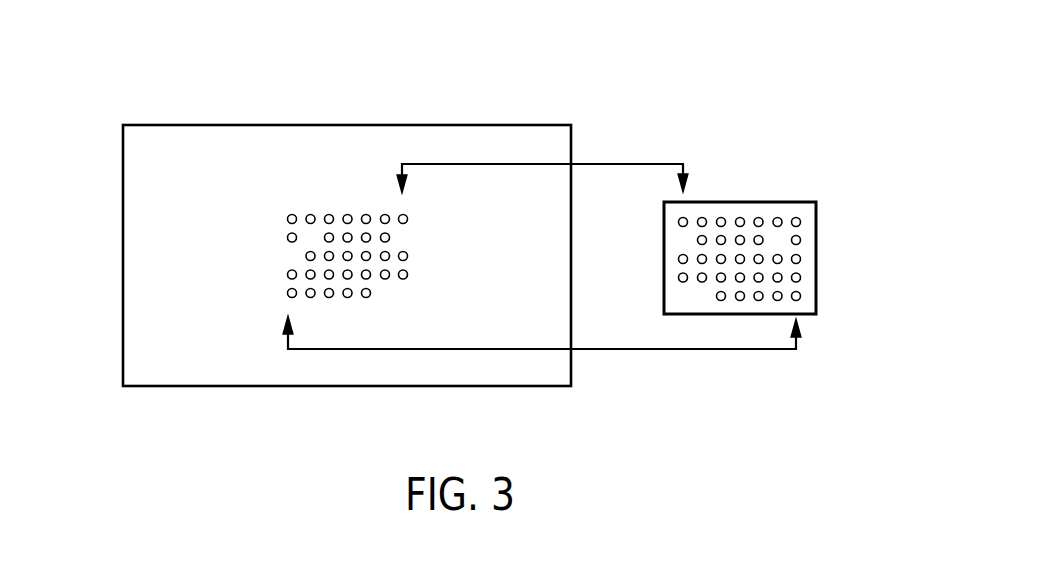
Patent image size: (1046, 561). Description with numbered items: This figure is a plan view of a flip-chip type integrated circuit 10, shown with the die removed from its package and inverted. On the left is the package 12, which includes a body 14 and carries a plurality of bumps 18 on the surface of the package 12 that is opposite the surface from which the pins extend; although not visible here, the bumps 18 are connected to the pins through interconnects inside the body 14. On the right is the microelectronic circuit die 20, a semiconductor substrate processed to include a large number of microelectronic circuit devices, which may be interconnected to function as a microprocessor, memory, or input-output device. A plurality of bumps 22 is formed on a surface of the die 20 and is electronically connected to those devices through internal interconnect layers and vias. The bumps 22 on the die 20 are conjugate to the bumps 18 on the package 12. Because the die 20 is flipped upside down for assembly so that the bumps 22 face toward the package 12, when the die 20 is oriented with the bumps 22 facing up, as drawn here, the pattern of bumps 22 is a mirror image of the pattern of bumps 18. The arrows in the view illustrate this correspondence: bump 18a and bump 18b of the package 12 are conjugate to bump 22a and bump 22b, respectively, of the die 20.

The integrated circuit 10 is at (145, 86).
The package 12 is at (486, 102).
The body 14 is at (572, 143).
The bumps 18 is at (335, 172).
The bump 18a is at (408, 219).
The bump 18b is at (287, 293).
The microelectronic circuit die 20 is at (817, 244).
The bumps 22 is at (748, 188).
The bump 22a is at (678, 222).
The bump 22b is at (801, 296).